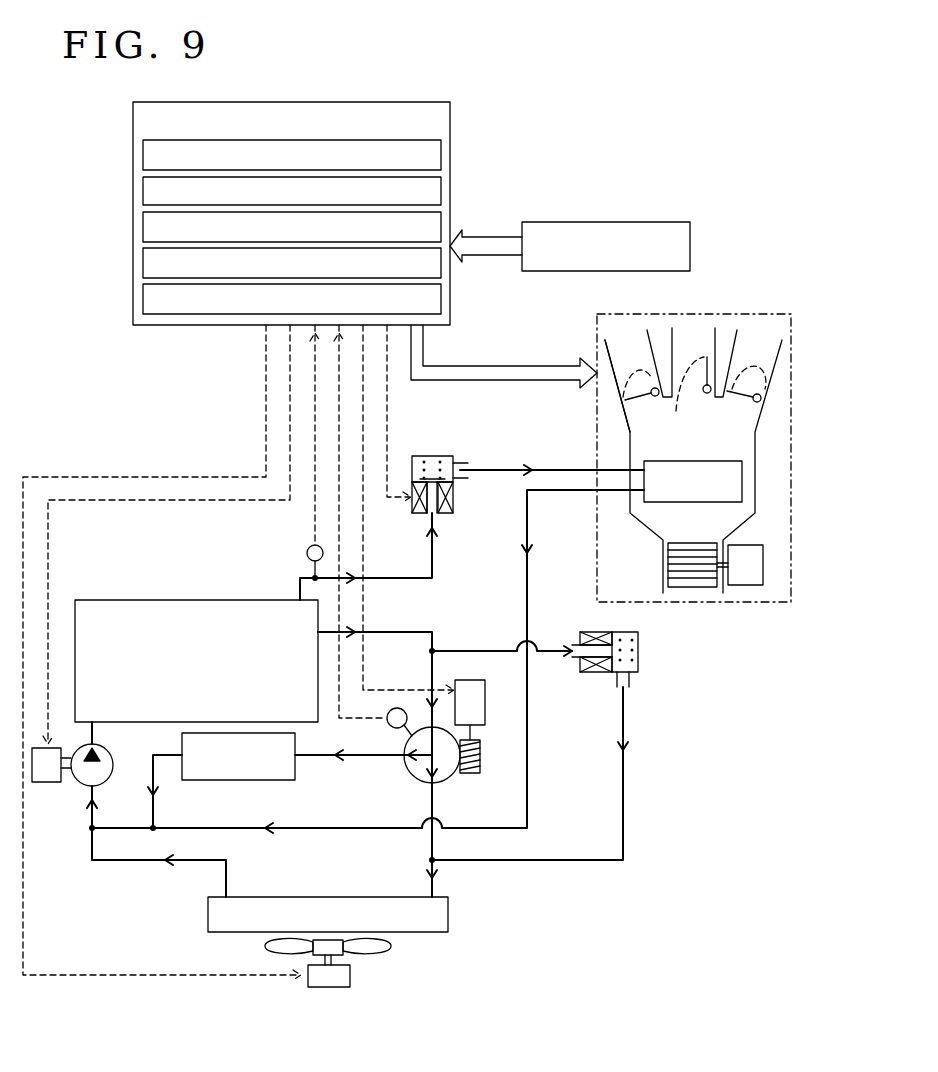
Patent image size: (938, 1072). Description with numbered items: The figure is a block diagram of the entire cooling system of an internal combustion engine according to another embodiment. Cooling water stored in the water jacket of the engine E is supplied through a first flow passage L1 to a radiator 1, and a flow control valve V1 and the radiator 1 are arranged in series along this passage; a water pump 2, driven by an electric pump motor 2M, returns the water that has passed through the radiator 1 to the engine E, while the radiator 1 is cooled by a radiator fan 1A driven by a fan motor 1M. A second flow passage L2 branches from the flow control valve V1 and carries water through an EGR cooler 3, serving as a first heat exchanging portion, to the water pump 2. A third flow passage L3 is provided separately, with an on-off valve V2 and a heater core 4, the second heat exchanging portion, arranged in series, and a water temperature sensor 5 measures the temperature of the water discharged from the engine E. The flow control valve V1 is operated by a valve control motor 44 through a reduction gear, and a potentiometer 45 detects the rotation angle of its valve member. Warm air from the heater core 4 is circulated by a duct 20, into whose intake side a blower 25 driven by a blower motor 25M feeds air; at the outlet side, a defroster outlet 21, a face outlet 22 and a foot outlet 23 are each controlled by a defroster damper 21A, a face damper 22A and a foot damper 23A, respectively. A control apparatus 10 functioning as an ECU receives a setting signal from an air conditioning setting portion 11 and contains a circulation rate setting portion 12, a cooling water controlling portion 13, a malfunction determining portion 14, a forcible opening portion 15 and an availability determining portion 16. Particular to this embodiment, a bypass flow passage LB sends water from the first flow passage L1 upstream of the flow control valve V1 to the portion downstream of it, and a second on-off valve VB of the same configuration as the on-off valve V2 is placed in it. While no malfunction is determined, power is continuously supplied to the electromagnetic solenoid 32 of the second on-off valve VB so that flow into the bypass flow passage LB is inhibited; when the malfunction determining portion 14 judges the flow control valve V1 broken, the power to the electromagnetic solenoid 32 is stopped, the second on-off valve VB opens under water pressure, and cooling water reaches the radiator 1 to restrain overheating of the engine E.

The radiator 1 is at (208, 915).
The radiator fan 1A is at (378, 953).
The fan motor 1M is at (330, 990).
The water pump 2 is at (112, 777).
The pump motor 2M is at (47, 785).
The EGR cooler 3 is at (243, 780).
The heater core 4 is at (742, 481).
The water temperature sensor 5 is at (307, 553).
The control apparatus 10 is at (452, 157).
The air conditioning setting portion 11 is at (583, 222).
The circulation rate setting portion 12 is at (143, 157).
The cooling water controlling portion 13 is at (143, 193).
The malfunction determining portion 14 is at (143, 229).
The forcible opening portion 15 is at (143, 265).
The availability determining portion 16 is at (143, 301).
The duct 20 is at (642, 522).
The defroster outlet 21 is at (737, 345).
The defroster damper 21A is at (737, 400).
The face outlet 22 is at (672, 342).
The face damper 22A is at (703, 375).
The foot outlet 23 is at (606, 352).
The foot damper 23A is at (637, 400).
The blower 25 is at (690, 590).
The blower motor 25M is at (745, 588).
The electromagnetic solenoid 32 is at (453, 506).
The valve control motor 44 is at (472, 680).
The potentiometer 45 is at (391, 727).
The flow control valve V1 is at (457, 777).
The on-off valve V2 is at (502, 511).
The second on-off valve VB is at (648, 668).
The engine E is at (197, 600).
The first flow passage L1 is at (395, 632).
The second flow passage L2 is at (362, 760).
The third flow passage L3 is at (430, 556).
The bypass flow passage LB is at (627, 780).